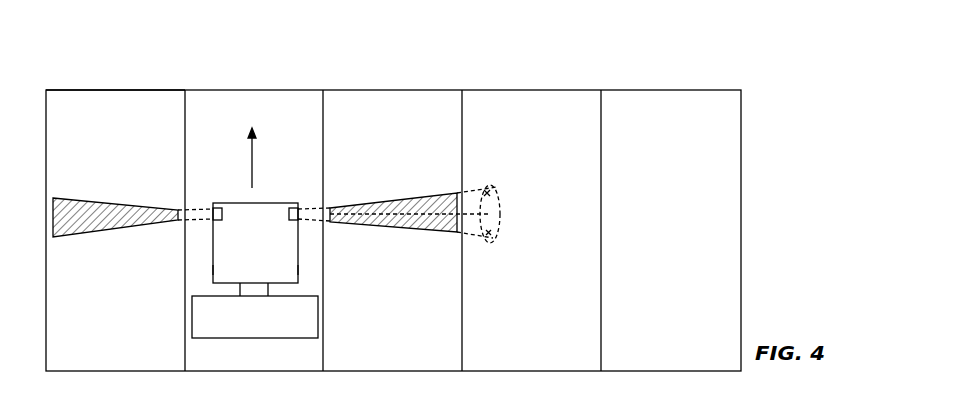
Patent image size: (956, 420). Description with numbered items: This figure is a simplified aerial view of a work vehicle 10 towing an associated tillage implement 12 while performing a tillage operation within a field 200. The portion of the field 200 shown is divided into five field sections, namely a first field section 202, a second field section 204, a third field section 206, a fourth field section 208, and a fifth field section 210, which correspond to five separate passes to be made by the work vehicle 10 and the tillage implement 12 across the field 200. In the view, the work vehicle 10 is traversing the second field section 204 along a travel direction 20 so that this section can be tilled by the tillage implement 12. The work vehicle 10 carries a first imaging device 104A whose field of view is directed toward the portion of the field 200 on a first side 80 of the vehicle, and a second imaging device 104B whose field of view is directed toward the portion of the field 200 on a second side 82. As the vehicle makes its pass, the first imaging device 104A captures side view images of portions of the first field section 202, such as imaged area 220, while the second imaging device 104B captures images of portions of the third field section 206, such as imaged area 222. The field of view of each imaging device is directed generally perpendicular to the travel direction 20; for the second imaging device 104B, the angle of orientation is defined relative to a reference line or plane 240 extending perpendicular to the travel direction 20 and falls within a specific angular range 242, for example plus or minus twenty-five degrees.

The field 200 is at (433, 186).
The first field section 202 is at (103, 100).
The second field section 204 is at (234, 100).
The third field section 206 is at (368, 100).
The fourth field section 208 is at (515, 100).
The fifth field section 210 is at (648, 100).
The work vehicle 10 is at (263, 254).
The tillage implement 12 is at (263, 325).
The travel direction 20 is at (242, 170).
The first imaging device 104A is at (217, 203).
The second imaging device 104B is at (298, 206).
The imaged area 220 is at (85, 225).
The imaged area 222 is at (425, 232).
The reference line or plane 240 is at (480, 242).
The angular range 242 is at (493, 200).
The first side 80 is at (213, 270).
The second side 82 is at (298, 270).